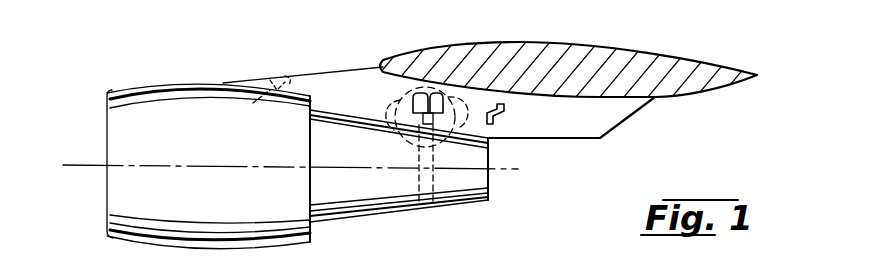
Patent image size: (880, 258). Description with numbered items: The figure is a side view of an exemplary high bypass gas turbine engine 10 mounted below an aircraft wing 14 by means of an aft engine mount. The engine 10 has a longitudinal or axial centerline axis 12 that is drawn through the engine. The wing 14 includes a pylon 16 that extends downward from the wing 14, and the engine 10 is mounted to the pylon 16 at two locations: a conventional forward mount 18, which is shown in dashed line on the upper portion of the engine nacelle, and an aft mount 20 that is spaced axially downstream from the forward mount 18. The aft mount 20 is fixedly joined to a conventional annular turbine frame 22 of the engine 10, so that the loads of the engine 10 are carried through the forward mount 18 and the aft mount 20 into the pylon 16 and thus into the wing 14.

The gas turbine engine 10 is at (164, 81).
The centerline axis 12 is at (92, 166).
The aircraft wing 14 is at (690, 58).
The pylon 16 is at (632, 118).
The forward mount 18 is at (267, 78).
The aft mount 20 is at (405, 110).
The annular turbine frame 22 is at (417, 176).